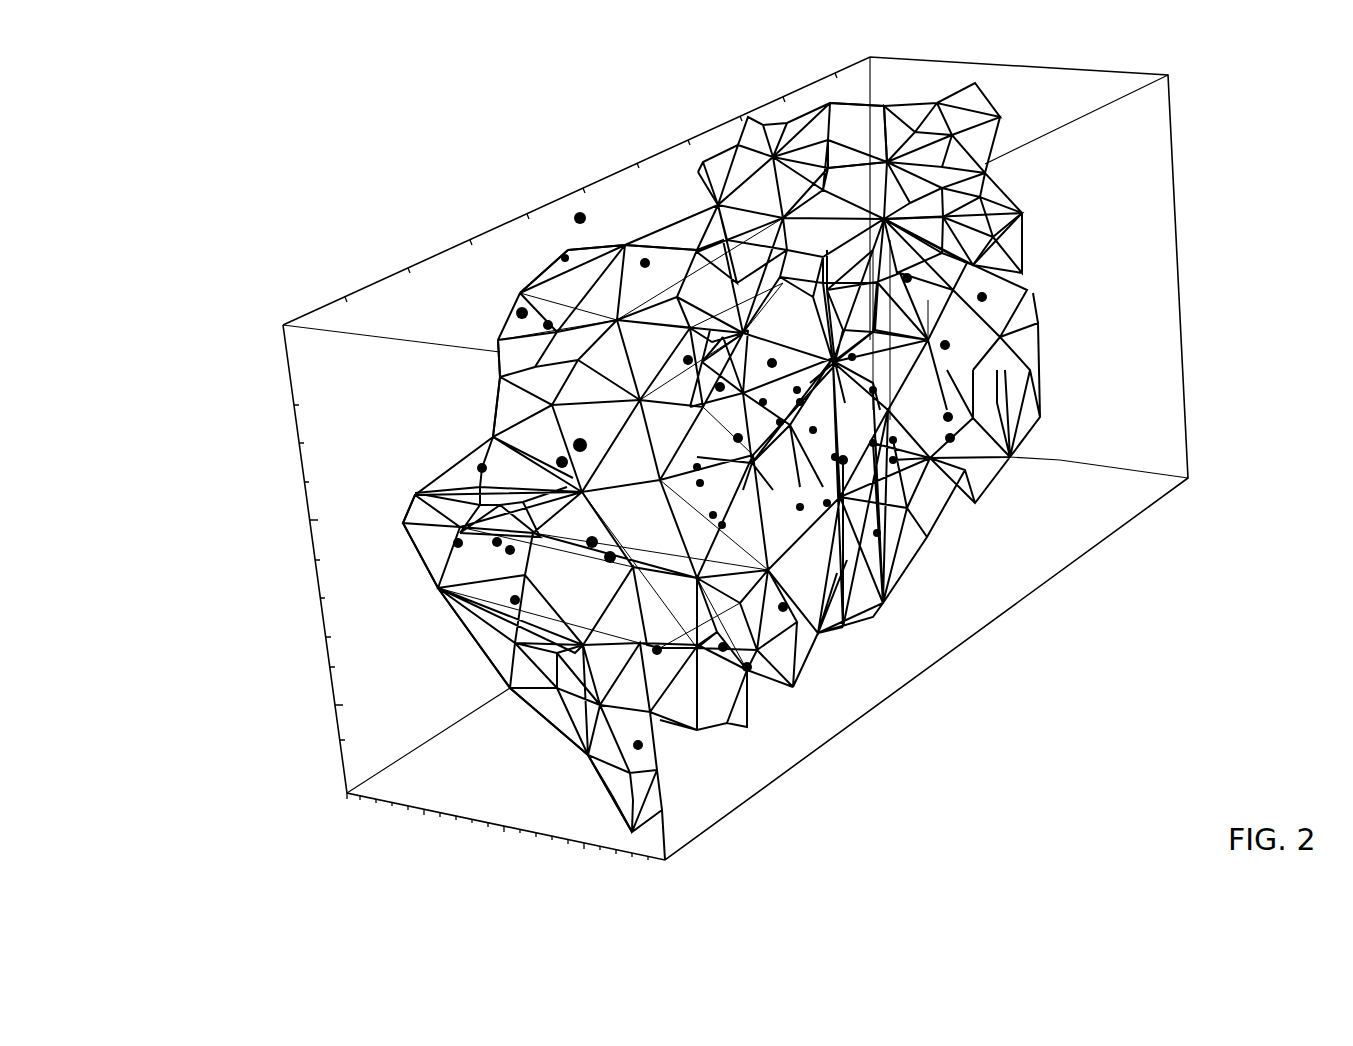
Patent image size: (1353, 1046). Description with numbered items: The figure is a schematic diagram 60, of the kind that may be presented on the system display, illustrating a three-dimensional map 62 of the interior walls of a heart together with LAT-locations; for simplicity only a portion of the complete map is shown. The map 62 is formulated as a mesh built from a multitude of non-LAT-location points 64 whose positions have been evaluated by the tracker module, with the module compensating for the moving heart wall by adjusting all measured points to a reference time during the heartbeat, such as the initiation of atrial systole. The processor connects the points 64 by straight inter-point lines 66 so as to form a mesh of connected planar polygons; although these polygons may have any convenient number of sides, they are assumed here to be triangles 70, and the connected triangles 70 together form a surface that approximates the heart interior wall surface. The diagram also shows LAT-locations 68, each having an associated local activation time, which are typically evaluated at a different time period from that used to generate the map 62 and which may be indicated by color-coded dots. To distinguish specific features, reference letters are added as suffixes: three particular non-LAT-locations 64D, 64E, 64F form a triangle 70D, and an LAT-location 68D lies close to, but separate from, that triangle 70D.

The schematic diagram 60 is at (188, 675).
The 3D map 62 is at (1128, 677).
The non-LAT-location points 64 is at (1043, 418).
The non-LAT-location 64D is at (520, 293).
The non-LAT-location 64E is at (568, 250).
The non-LAT-location 64F is at (625, 245).
The inter-point lines 66 is at (993, 145).
The LAT-locations 68 is at (403, 523).
The LAT-location 68D is at (578, 217).
The triangles 70 is at (919, 478).
The triangle 70D is at (563, 255).